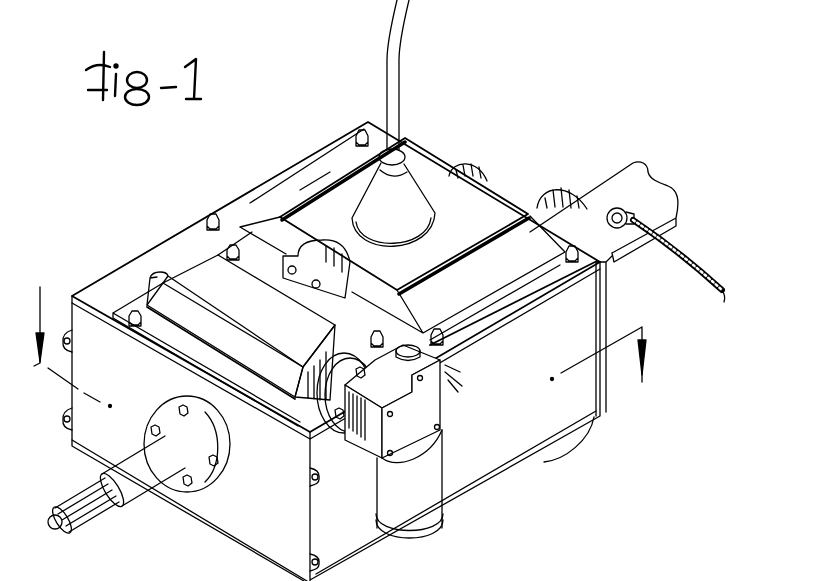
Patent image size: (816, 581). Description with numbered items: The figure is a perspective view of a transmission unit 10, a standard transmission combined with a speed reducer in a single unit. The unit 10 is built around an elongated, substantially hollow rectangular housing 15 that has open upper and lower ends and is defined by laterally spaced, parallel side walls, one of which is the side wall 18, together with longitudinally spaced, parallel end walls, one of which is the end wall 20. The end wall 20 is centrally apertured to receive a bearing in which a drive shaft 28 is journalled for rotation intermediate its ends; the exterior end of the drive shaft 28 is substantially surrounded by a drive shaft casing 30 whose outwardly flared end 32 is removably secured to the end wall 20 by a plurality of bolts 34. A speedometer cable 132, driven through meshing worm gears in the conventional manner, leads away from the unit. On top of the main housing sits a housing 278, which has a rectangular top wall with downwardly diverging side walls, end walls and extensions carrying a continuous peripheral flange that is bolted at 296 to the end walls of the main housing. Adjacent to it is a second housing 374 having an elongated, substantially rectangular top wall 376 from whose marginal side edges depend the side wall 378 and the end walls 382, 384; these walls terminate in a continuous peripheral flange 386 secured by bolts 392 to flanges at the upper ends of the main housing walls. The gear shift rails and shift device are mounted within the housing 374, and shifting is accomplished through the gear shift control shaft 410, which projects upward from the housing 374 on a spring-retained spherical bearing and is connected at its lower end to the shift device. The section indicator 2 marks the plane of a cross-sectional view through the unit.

The transmission unit 10 is at (221, 196).
The housing 15 is at (551, 453).
The side wall 18 is at (364, 546).
The end wall 20 is at (292, 547).
The drive shaft 28 is at (97, 521).
The drive shaft casing 30 is at (137, 498).
The outwardly flared end 32 is at (208, 488).
The bolts 34 is at (219, 460).
The speedometer cable 132 is at (721, 287).
The housing 278 is at (196, 245).
The bolts 296 is at (136, 328).
The housing 374 is at (509, 210).
The top wall 376 is at (476, 224).
The side wall 378 is at (298, 236).
The end wall 382 is at (342, 170).
The end wall 384 is at (497, 277).
The peripheral flange 386 is at (555, 278).
The bolts 392 is at (452, 340).
The gear shift control shaft 410 is at (390, 62).
The section line 2- 2 is at (352, 347).